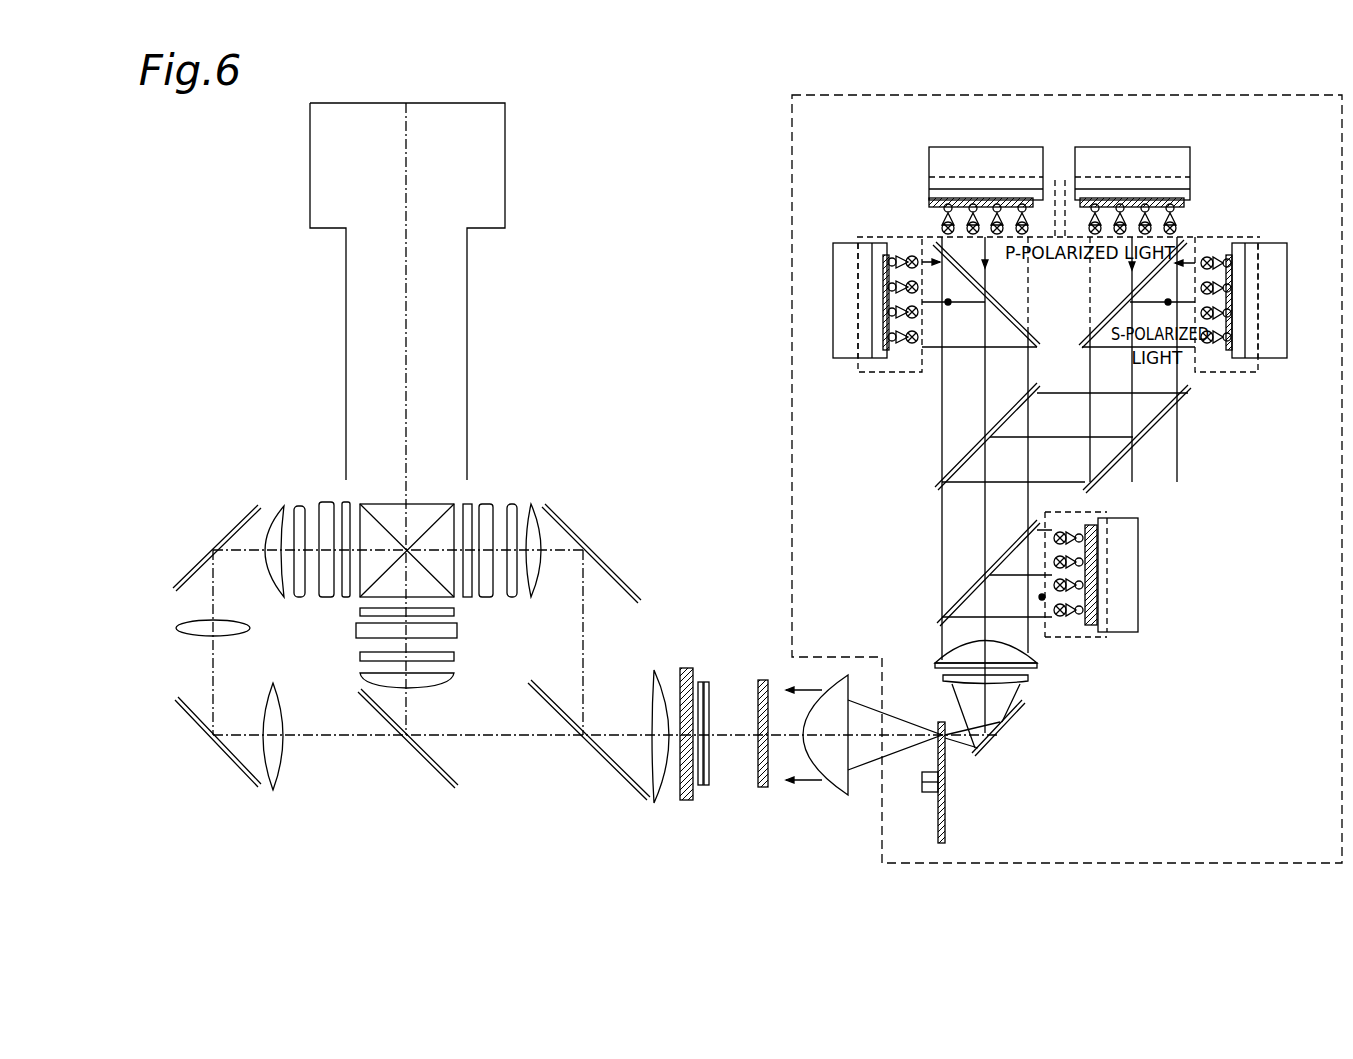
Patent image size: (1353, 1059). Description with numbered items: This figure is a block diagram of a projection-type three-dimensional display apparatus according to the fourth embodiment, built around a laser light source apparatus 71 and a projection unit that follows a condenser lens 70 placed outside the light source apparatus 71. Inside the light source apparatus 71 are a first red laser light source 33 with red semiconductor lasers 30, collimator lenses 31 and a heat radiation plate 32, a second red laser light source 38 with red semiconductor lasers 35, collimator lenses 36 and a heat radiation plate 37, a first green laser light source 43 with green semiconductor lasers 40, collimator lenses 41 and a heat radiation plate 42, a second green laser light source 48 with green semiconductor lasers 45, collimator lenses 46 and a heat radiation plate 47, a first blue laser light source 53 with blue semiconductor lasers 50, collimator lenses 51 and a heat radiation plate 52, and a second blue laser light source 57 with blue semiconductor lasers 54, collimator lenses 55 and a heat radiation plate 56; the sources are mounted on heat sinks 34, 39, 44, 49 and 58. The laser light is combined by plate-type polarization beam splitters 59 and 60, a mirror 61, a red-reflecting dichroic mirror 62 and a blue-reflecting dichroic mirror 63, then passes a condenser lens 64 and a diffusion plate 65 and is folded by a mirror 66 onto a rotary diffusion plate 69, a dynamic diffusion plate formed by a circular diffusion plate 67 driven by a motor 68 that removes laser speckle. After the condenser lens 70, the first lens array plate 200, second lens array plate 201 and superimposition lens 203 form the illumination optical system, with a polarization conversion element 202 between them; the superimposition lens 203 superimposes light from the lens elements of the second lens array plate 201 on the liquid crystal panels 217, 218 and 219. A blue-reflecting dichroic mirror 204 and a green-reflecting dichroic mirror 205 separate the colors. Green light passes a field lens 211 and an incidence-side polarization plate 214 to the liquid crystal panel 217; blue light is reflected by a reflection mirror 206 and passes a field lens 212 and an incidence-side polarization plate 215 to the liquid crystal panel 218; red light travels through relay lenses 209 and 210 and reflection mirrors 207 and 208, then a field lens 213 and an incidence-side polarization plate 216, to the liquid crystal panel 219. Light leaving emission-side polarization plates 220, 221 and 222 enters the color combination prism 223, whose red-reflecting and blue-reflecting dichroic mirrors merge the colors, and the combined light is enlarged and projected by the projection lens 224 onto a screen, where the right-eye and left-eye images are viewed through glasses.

The red semiconductor lasers 30 is at (1224, 350).
The collimator lenses 31 is at (1210, 348).
The heat radiation plate 32 is at (1242, 362).
The first red laser light source 33 is at (1260, 358).
The heat sink 34 is at (1256, 319).
The red semiconductor lasers 35 is at (1184, 201).
The collimator lenses 36 is at (1180, 223).
The heat radiation plate 37 is at (1190, 188).
The second red laser light source 38 is at (1180, 176).
The heat sink 39 is at (1171, 167).
The green semiconductor lasers 40 is at (900, 350).
The collimator lenses 41 is at (908, 350).
The heat radiation plate 42 is at (884, 360).
The first green laser light source 43 is at (860, 360).
The heat sink 44 is at (869, 330).
The green semiconductor lasers 45 is at (928, 199).
The collimator lenses 46 is at (940, 220).
The heat radiation plate 47 is at (928, 179).
The second green laser light source 48 is at (936, 182).
The heat sink 49 is at (946, 167).
The blue semiconductor lasers 50 is at (1084, 636).
The collimator lenses 51 is at (1062, 636).
The heat radiation plate 52 is at (1071, 638).
The first blue laser light source 53 is at (1119, 600).
The blue semiconductor lasers 54 is at (1112, 536).
The collimator lenses 55 is at (1052, 522).
The heat radiation plate 56 is at (1094, 522).
The second blue laser light source 57 is at (1111, 553).
The heat sink 58 is at (1139, 592).
The plate-type polarization beam splitter 59 is at (1110, 328).
The plate-type polarization beam splitter 60 is at (1040, 342).
The mirror 61 is at (1134, 444).
The red-reflecting dichroic mirror 62 is at (930, 482).
The blue-reflecting dichroic mirror 63 is at (932, 616).
The condenser lens 64 is at (936, 658).
The diffusion plate 65 is at (942, 682).
The mirror 66 is at (1000, 742).
The circular diffusion plate 67 is at (946, 800).
The motor 68 is at (940, 782).
The rotary diffusion plate 69 is at (1020, 838).
The condenser lens 70 is at (843, 796).
The light source apparatus 71 is at (1128, 94).
The first lens array plate 200 is at (758, 686).
The second lens array plate 201 is at (706, 788).
The polarization conversion element 202 is at (688, 802).
The superimposition lens 203 is at (656, 804).
The blue-reflecting dichroic mirror 204 is at (590, 757).
The green-reflecting dichroic mirror 205 is at (424, 762).
The reflection mirror 206 is at (574, 542).
The reflection mirror 207 is at (220, 760).
The reflection mirror 208 is at (180, 579).
The relay lens 209 is at (282, 786).
The relay lens 210 is at (192, 640).
The field lens 211 is at (444, 690).
The field lens 212 is at (538, 598).
The field lens 213 is at (270, 506).
The incidence-side polarization plate 214 is at (456, 656).
The incidence-side polarization plate 215 is at (514, 504).
The incidence-side polarization plate 216 is at (300, 504).
The liquid crystal panel 217 is at (356, 632).
The liquid crystal panel 218 is at (488, 504).
The liquid crystal panel 219 is at (325, 502).
The emission-side polarization plate 220 is at (358, 612).
The emission-side polarization plate 221 is at (466, 598).
The emission-side polarization plate 222 is at (346, 502).
The color combination prism 223 is at (455, 503).
The projection lens 224 is at (346, 302).